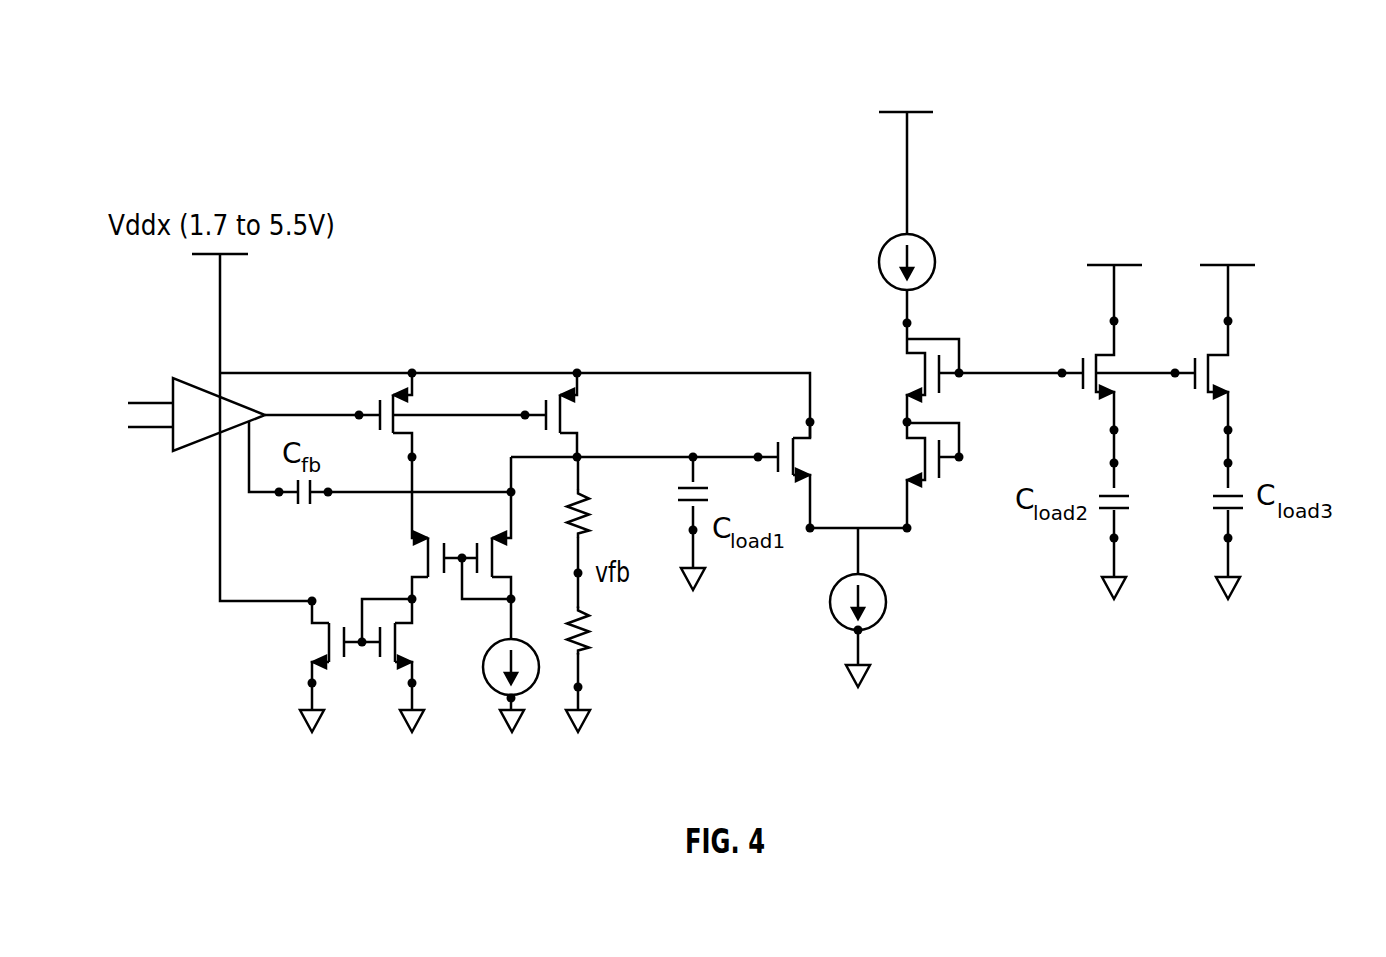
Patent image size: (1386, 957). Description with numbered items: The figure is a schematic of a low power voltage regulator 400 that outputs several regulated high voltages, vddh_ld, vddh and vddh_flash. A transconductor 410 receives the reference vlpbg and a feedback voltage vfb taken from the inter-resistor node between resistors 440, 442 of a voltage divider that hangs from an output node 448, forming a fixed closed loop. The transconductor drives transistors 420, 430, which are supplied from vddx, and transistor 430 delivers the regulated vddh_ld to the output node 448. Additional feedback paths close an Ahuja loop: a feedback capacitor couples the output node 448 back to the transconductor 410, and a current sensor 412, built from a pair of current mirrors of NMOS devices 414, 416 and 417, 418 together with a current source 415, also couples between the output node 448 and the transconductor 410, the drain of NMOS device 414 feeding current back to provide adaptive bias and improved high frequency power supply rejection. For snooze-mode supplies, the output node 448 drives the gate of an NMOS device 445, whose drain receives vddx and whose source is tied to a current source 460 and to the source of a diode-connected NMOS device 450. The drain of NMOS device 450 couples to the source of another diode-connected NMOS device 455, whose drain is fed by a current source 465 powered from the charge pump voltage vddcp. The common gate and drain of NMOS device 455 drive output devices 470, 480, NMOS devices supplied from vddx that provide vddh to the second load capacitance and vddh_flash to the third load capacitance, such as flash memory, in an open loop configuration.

The voltage regulator 400 is at (170, 96).
The transconductor 410 is at (173, 380).
The current sensor 412 is at (405, 700).
The NMOS device 414 is at (328, 648).
The current source 415 is at (529, 688).
The NMOS device 416 is at (397, 642).
The NMOS device 417 is at (426, 556).
The NMOS device 418 is at (494, 560).
The transistor 420 is at (403, 393).
The transistor 430 is at (568, 393).
The resistor 440 is at (588, 515).
The resistor 442 is at (590, 635).
The NMOS device 445 is at (796, 446).
The output node 448 is at (577, 457).
The diode-connected NMOS device 450 is at (925, 478).
The diode-connected NMOS device 455 is at (920, 372).
The current source 460 is at (880, 625).
The current source 465 is at (925, 240).
The output device 470 is at (1103, 355).
The output device 480 is at (1218, 365).